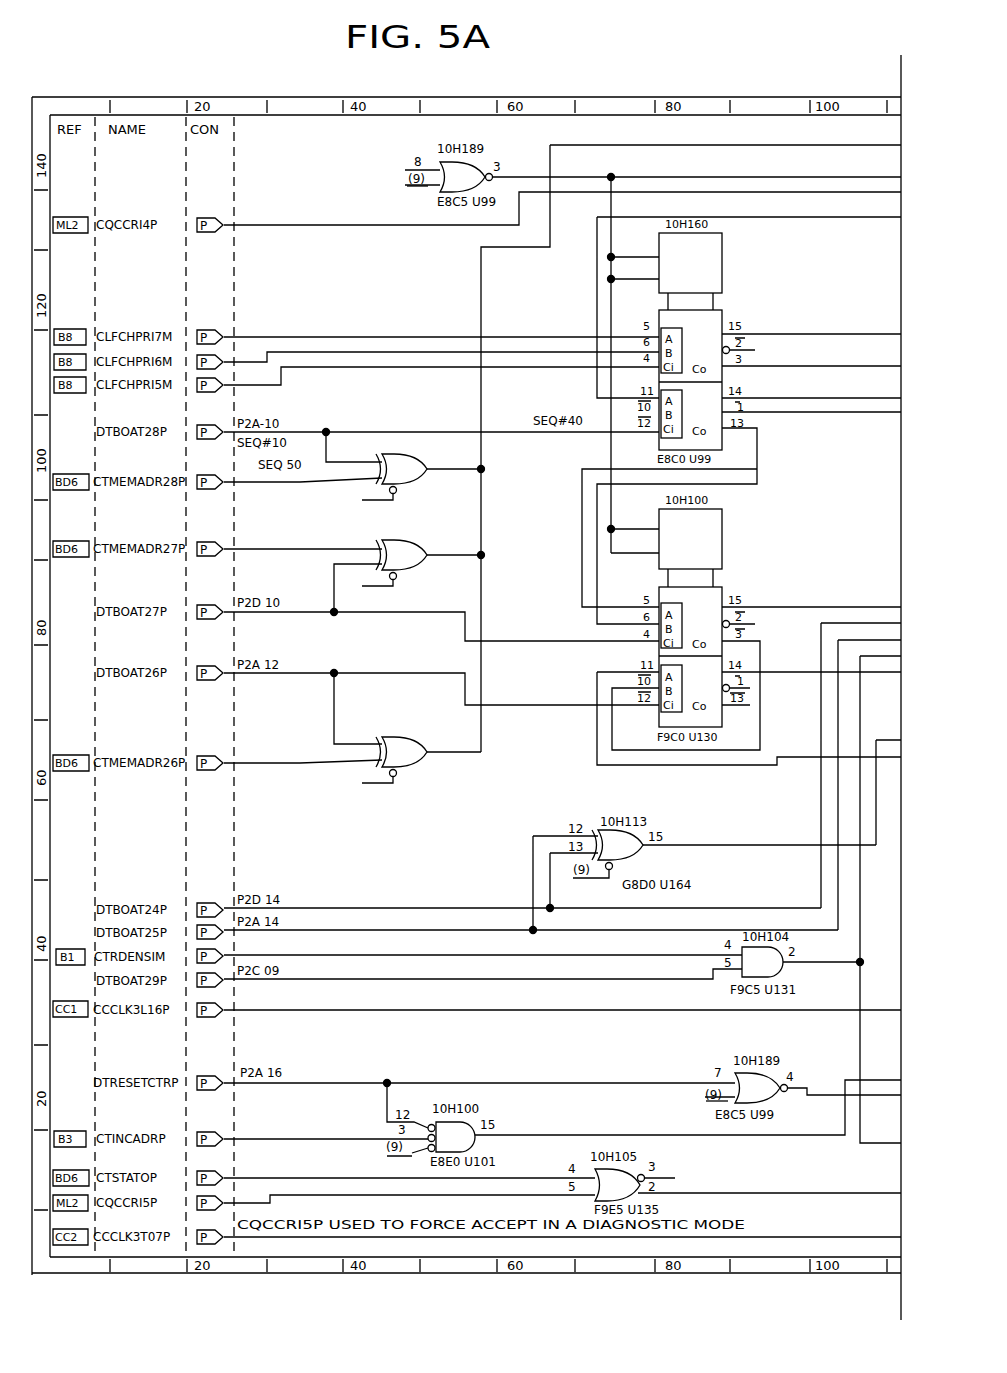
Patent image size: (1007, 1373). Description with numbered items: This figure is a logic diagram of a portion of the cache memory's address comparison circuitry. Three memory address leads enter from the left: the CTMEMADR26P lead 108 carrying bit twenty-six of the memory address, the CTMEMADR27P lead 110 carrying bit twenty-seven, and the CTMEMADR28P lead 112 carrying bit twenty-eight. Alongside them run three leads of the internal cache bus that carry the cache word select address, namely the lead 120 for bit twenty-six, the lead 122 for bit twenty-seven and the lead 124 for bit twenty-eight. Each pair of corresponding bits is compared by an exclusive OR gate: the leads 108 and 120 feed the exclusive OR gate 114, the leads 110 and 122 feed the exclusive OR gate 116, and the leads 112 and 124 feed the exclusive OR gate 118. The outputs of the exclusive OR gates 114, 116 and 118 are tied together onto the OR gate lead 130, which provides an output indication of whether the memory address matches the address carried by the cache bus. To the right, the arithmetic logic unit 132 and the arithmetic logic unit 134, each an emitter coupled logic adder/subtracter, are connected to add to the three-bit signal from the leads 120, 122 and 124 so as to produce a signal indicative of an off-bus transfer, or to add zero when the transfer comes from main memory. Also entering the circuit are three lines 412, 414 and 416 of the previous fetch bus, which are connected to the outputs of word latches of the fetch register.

The CTMEMADR26P lead 108 is at (283, 765).
The CTMEMADR27P lead 110 is at (318, 548).
The CTMEMADR28P lead 112 is at (255, 484).
The exclusive OR gate 114 is at (415, 765).
The exclusive OR gate 116 is at (415, 568).
The exclusive OR gate 118 is at (415, 482).
The lead 120 is at (270, 676).
The lead 122 is at (313, 613).
The lead 124 is at (366, 430).
The OR gate lead 130 is at (631, 518).
The arithmetic logic unit 132 is at (722, 258).
The arithmetic logic unit 134 is at (722, 536).
The previous fetch bus line 412 is at (390, 366).
The previous fetch bus line 414 is at (330, 352).
The previous fetch bus line 416 is at (268, 335).